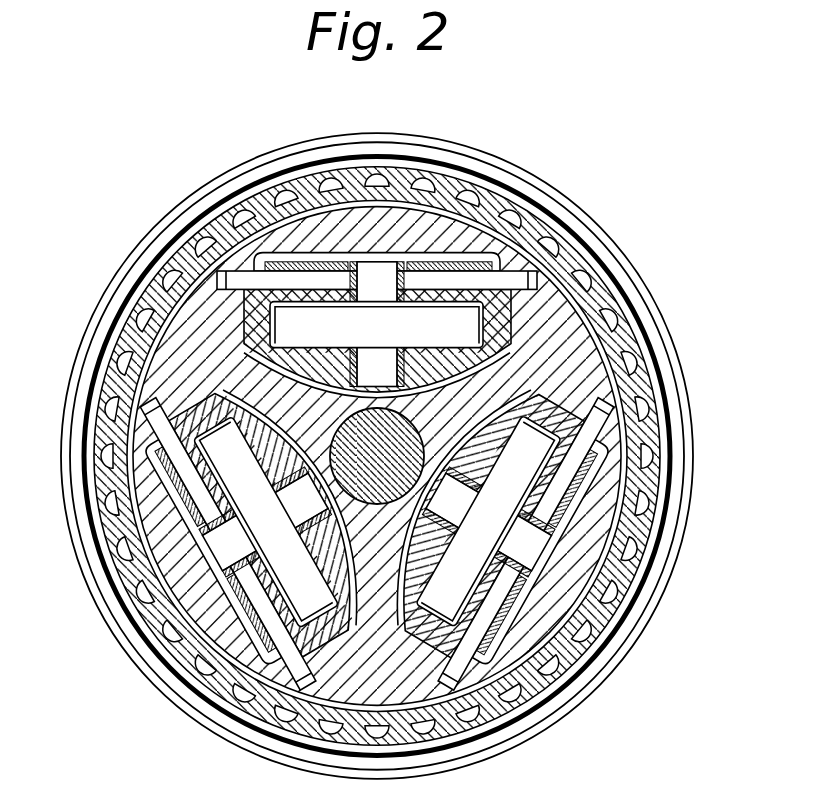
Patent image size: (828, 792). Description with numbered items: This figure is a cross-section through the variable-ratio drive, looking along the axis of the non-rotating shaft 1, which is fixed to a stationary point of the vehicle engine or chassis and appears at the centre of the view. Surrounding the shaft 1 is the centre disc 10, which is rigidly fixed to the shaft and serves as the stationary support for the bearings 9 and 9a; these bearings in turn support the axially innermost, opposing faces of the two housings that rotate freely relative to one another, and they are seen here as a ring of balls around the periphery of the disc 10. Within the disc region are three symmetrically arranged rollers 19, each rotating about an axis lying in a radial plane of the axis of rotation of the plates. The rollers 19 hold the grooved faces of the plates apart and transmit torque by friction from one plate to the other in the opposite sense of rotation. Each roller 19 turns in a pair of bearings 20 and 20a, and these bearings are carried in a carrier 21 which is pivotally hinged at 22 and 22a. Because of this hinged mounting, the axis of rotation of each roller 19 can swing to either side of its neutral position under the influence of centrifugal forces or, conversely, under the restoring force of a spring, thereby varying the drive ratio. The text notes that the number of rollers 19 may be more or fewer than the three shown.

The non-rotating shaft 1 is at (386, 449).
The bearing 9 is at (398, 456).
The bearing 9a is at (377, 456).
The centre disc 10 is at (423, 456).
The roller 19 is at (400, 204).
The bearing 20 is at (385, 229).
The bearing 20a is at (390, 376).
The carrier 21 is at (292, 317).
The hinge 22 is at (374, 209).
The hinge 22a is at (436, 211).